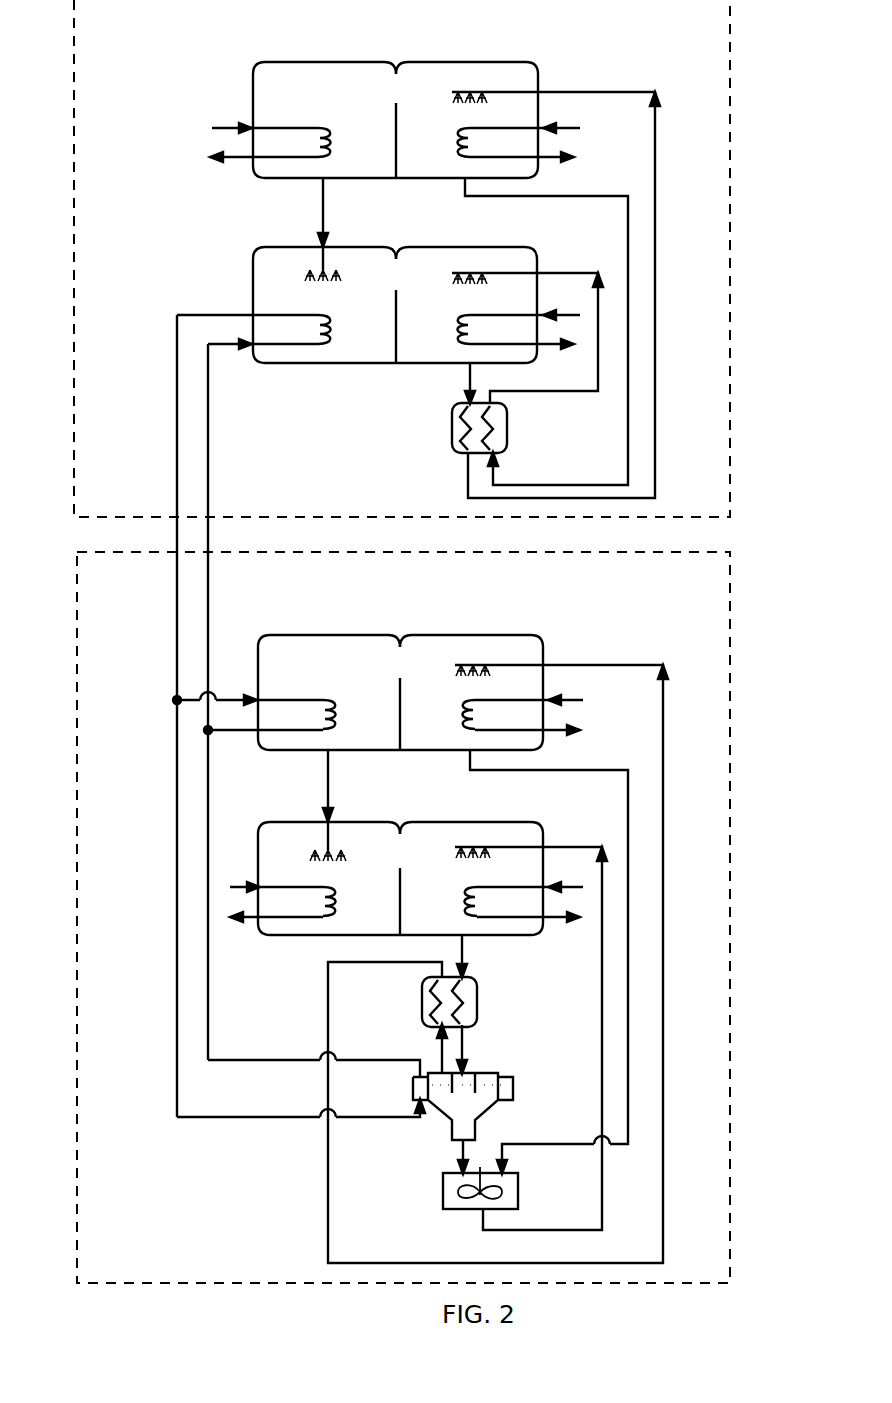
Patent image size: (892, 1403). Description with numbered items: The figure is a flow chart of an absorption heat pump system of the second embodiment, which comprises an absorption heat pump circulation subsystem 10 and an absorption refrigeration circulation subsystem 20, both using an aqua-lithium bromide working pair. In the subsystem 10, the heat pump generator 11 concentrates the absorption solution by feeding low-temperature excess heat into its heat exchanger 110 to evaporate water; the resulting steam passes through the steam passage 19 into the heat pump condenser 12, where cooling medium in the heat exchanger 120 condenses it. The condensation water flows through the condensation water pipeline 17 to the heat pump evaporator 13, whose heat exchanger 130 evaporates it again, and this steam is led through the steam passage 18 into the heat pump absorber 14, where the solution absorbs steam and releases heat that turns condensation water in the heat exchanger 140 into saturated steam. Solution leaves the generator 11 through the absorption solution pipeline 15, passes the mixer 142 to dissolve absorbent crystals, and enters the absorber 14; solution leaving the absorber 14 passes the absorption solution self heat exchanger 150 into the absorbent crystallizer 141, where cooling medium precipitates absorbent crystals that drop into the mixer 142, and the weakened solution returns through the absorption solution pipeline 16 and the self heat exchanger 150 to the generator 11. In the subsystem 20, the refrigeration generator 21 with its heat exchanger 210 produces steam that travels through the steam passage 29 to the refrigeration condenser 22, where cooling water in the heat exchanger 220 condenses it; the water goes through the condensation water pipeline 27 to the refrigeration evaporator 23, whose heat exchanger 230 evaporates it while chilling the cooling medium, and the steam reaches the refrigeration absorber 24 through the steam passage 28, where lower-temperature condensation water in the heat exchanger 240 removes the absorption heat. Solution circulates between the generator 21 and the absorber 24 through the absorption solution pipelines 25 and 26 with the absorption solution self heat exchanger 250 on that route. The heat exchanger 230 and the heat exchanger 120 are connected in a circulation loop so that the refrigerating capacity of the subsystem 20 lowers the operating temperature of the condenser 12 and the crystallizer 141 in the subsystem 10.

The absorption heat pump circulation subsystem 10 is at (745, 584).
The absorption refrigeration circulation subsystem 20 is at (745, 58).
The heat pump generator 11 is at (523, 635).
The heat pump condenser 12 is at (287, 635).
The heat pump evaporator 13 is at (270, 822).
The heat pump absorber 14 is at (525, 822).
The absorption solution pipeline 15 is at (595, 770).
The absorption solution pipeline 16 is at (664, 737).
The condensation water pipeline 17 is at (325, 782).
The steam passage 18 is at (405, 850).
The steam passage 19 is at (402, 665).
The heat exchanger 110 is at (465, 723).
The heat exchanger 120 is at (337, 723).
The heat exchanger 130 is at (337, 912).
The heat exchanger 140 is at (465, 912).
The absorbent crystallizer 141 is at (452, 1130).
The mixer 142 is at (443, 1198).
The absorption solution self heat exchanger 150 is at (422, 1010).
The refrigeration generator 21 is at (520, 62).
The refrigeration condenser 22 is at (283, 62).
The refrigeration evaporator 23 is at (268, 247).
The refrigeration absorber 24 is at (525, 247).
The absorption solution pipeline 25 is at (590, 196).
The absorption solution pipeline 26 is at (612, 92).
The condensation water pipeline 27 is at (320, 205).
The steam passage 28 is at (405, 275).
The steam passage 29 is at (403, 90).
The heat exchanger 210 is at (462, 150).
The heat exchanger 220 is at (333, 148).
The heat exchanger 230 is at (333, 340).
The heat exchanger 240 is at (462, 340).
The absorption solution self heat exchanger 250 is at (452, 430).